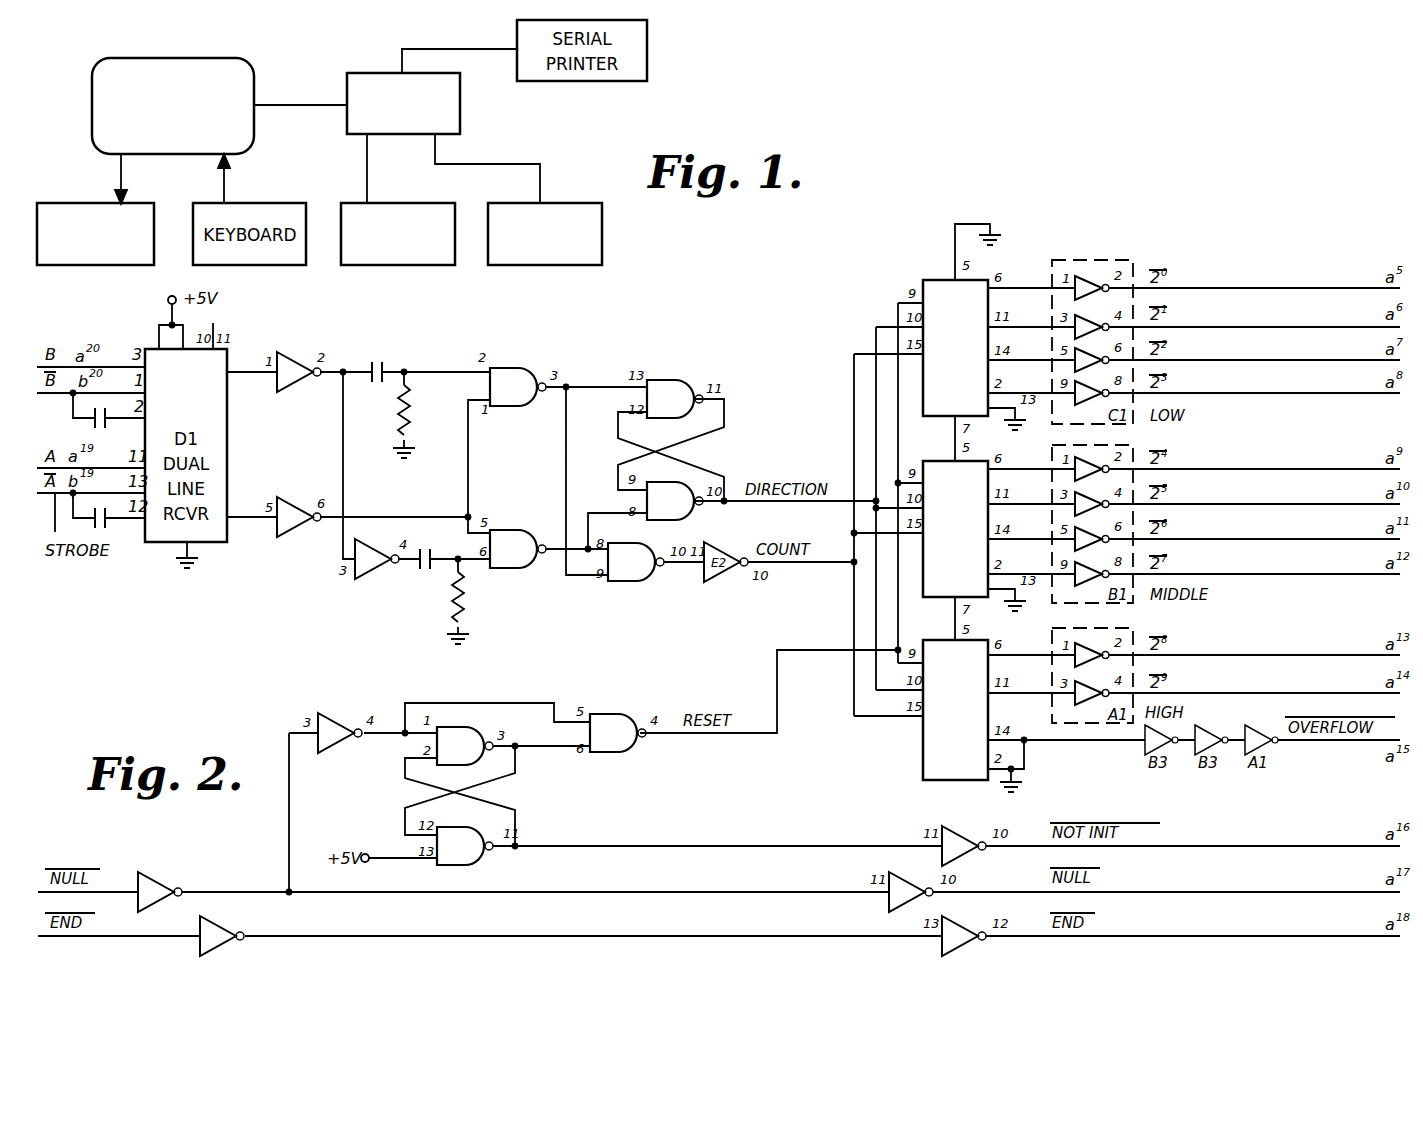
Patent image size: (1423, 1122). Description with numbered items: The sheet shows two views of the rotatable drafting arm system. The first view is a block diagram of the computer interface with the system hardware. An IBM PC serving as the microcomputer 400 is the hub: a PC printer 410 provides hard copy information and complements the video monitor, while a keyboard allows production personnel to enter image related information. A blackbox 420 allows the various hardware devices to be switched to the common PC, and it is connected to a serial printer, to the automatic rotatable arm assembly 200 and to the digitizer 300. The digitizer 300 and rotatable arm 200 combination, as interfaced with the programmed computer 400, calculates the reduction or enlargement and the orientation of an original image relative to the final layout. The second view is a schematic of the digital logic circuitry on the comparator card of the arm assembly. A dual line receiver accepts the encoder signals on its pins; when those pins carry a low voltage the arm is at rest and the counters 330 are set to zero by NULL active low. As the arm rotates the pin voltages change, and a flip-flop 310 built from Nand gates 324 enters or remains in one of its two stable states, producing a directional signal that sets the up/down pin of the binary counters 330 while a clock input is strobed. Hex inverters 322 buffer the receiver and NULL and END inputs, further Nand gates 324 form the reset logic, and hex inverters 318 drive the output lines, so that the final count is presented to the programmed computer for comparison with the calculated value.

In FIG. 1, the microcomputer 400 is at (173, 106).
In FIG. 1, the blackbox 420 is at (403, 103).
In FIG. 1, the PC printer 410 is at (95, 234).
In FIG. 1, the rotatable arm assembly 200 is at (398, 261).
In FIG. 1, the digitizer 300 is at (545, 234).
In FIG. 2, the hex inverters 322 is at (268, 635).
In FIG. 2, the Nand gates 324 is at (590, 598).
In FIG. 2, the flip-flop 310 is at (722, 356).
In FIG. 2, the counters 330 is at (955, 530).
In FIG. 2, the hex inverters 318 is at (923, 873).